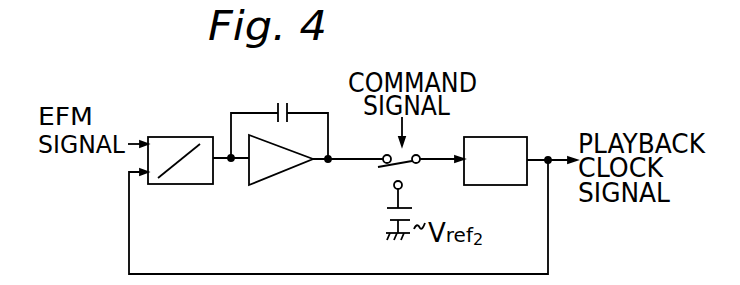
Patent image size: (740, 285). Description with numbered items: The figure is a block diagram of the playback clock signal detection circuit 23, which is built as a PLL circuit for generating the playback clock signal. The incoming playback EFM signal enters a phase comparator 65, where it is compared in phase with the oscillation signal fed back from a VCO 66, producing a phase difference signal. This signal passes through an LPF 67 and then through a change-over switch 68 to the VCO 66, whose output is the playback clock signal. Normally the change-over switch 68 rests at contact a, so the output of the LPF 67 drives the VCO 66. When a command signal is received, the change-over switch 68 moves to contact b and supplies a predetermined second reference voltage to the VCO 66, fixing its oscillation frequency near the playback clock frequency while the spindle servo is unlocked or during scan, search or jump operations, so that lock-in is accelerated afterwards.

The playback clock signal detection circuit 23 is at (530, 108).
The phase comparator 65 is at (185, 136).
The LPF 67 is at (246, 196).
The change-over switch 68 is at (383, 181).
The VCO 66 is at (516, 185).